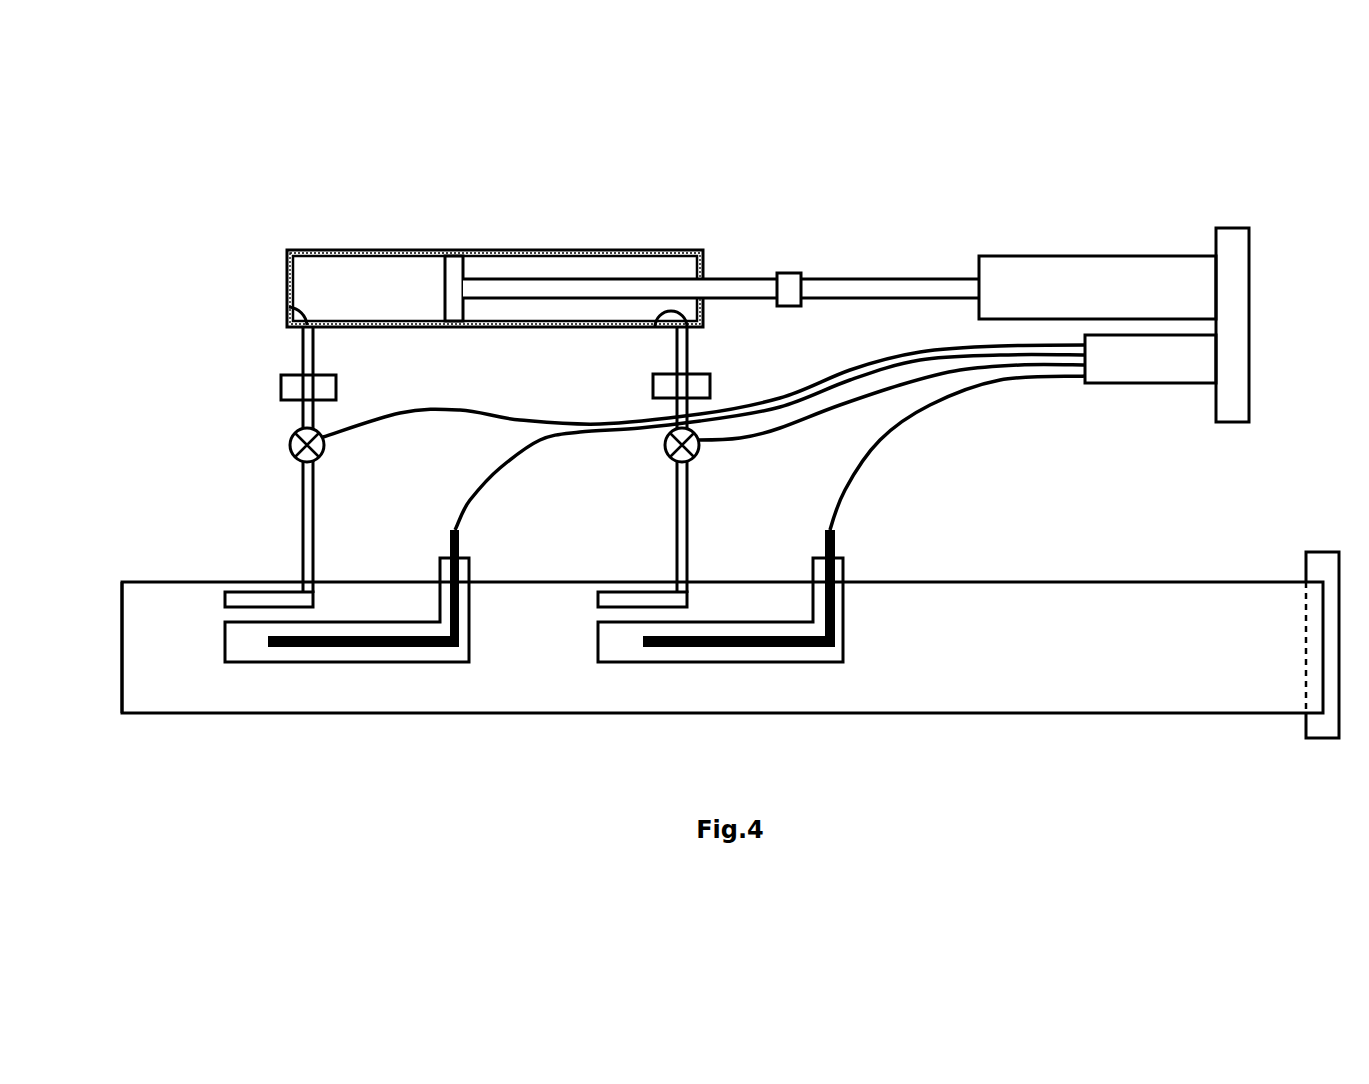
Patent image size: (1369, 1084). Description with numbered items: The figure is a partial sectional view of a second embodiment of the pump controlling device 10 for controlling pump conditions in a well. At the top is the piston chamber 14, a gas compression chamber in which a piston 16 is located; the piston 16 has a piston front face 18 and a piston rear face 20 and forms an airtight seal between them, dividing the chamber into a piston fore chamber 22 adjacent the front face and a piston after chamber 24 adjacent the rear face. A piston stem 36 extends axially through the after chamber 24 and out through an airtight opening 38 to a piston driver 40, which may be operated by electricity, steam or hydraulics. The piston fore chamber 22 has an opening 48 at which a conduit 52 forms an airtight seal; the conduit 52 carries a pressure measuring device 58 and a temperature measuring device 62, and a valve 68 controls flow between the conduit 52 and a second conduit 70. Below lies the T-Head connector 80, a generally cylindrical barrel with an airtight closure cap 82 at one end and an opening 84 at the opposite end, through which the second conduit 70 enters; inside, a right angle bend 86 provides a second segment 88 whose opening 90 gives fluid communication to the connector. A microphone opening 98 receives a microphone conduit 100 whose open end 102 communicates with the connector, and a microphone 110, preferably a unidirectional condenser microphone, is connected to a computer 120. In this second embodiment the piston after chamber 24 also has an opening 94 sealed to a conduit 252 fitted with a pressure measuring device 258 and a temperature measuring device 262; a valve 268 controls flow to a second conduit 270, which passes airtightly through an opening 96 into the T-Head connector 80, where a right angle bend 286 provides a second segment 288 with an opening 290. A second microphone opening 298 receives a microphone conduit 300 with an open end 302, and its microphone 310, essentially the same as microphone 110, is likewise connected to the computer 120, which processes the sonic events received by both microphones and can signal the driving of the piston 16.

The pump controlling device 10 is at (556, 807).
The piston chamber 14 is at (575, 250).
The piston 16 is at (533, 272).
The piston front face 18 is at (445, 268).
The piston rear face 20 is at (466, 268).
The piston fore chamber 22 is at (345, 280).
The piston after chamber 24 is at (655, 270).
The piston stem 36 is at (605, 285).
The airtight opening 38 is at (720, 304).
The piston driver 40 is at (1107, 278).
The opening 48 is at (287, 305).
The conduit 52 is at (315, 347).
The pressure measuring device 58 is at (281, 387).
The temperature measuring device 62 is at (336, 387).
The valve 68 is at (324, 445).
The second conduit 70 is at (303, 510).
The T-Head connector 80 is at (212, 713).
The closure cap 82 is at (1320, 548).
The opening 84 is at (122, 615).
The right angle bend 86 is at (313, 597).
The second segment 88 is at (268, 592).
The opening 90 is at (225, 598).
The opening 94 is at (655, 330).
The opening 96 is at (684, 584).
The microphone opening 98 is at (472, 580).
The microphone conduit 100 is at (373, 662).
The open end 102 is at (225, 642).
The microphone 110 is at (293, 648).
The computer 120 is at (1131, 370).
The conduit 252 is at (690, 348).
The pressure measuring device 258 is at (653, 387).
The temperature measuring device 262 is at (710, 388).
The valve 268 is at (665, 445).
The second conduit 270 is at (677, 510).
The right angle bend 286 is at (690, 597).
The second segment 288 is at (645, 592).
The opening 290 is at (598, 598).
The microphone opening 298 is at (845, 580).
The microphone conduit 300 is at (746, 662).
The open end 302 is at (598, 642).
The microphone 310 is at (665, 648).